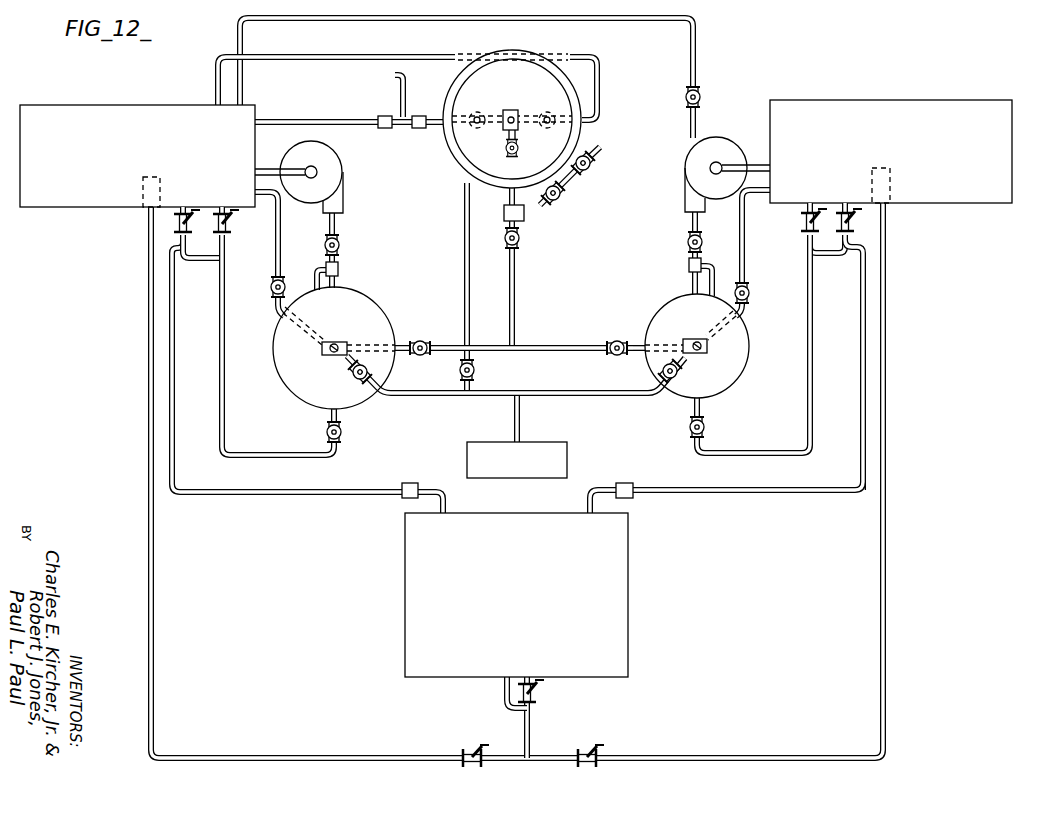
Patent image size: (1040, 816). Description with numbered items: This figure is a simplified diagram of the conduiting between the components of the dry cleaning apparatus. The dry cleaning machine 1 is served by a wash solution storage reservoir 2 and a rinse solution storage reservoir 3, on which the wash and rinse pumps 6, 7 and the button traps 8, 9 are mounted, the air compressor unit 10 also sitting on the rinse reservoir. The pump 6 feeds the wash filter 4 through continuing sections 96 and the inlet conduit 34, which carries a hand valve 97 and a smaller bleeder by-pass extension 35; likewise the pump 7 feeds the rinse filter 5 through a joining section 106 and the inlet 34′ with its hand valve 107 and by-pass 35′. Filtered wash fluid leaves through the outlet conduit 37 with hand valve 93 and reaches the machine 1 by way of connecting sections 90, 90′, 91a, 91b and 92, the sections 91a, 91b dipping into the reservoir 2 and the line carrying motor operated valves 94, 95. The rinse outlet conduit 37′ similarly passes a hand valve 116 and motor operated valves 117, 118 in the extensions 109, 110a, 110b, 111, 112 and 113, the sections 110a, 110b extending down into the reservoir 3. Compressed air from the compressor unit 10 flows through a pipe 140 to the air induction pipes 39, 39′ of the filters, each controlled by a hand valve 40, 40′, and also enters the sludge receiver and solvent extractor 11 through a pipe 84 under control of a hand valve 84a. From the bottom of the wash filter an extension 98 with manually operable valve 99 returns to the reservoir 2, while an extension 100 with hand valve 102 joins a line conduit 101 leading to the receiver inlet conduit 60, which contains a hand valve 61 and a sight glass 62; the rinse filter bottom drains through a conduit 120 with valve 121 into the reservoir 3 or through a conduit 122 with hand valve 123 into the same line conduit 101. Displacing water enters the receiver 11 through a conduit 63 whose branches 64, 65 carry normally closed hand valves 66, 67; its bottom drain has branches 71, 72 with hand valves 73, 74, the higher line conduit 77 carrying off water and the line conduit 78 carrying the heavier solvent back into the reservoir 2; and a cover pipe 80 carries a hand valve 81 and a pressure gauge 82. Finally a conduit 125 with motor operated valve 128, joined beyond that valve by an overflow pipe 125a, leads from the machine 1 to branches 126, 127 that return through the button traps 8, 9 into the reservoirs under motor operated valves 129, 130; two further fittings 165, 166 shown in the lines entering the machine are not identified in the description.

The dry cleaning machine 1 is at (516, 595).
The wash solution storage reservoir 2 is at (133, 104).
The rinse solution storage reservoir 3 is at (880, 99).
The wash fluid filter 4 is at (383, 308).
The rinse fluid filter 5 is at (655, 306).
The wash fluid pump 6 is at (344, 175).
The rinse fluid pump 7 is at (685, 175).
The button trap 8 is at (142, 184).
The button trap 9 is at (891, 178).
The motor-driven air compressor unit 10 is at (568, 457).
The sludge receiver and solvent extractor 11 is at (568, 62).
The inlet conduit 34 is at (340, 270).
The inlet conduit 34′ is at (688, 268).
The bleeder by-pass pipe 35 is at (315, 283).
The bleeder by-pass pipe 35′ is at (712, 263).
The outlet conduit 37 is at (338, 414).
The outlet conduit 37′ is at (700, 405).
The air induction pipe 39 is at (442, 395).
The air induction pipe 39′ is at (622, 395).
The hand valve 40 is at (352, 378).
The hand valve 40′ is at (680, 376).
The inlet conduit 60 is at (509, 200).
The hand valve 61 is at (521, 244).
The sight glass 62 is at (525, 218).
The displacing liquid conduit 63 is at (562, 192).
The branch 64 is at (546, 210).
The branch 65 is at (592, 160).
The hand valve 66 is at (560, 201).
The hand valve 67 is at (572, 175).
The drain branch 71 is at (450, 108).
The drain branch 72 is at (216, 88).
The hand valve 73 is at (478, 110).
The hand valve 74 is at (547, 110).
The line conduit 77 is at (400, 80).
The line conduit 78 is at (315, 120).
The pipe 80 is at (508, 137).
The hand valve 81 is at (520, 146).
The pressure gauge 82 is at (511, 108).
The compressed air pipe 84 is at (464, 250).
The hand valve 84a is at (476, 370).
The connecting section 90 is at (278, 456).
The connecting section 90′ is at (204, 260).
The connecting section 91a is at (223, 208).
The connecting section 91b is at (184, 208).
The connecting section 92 is at (174, 365).
The hand valve 93 is at (344, 434).
The motor operated valve 94 is at (232, 224).
The motor operated valve 95 is at (174, 224).
The continuing sections 96 is at (336, 222).
The hand valve 97 is at (341, 243).
The drain extension 98 is at (276, 253).
The manually-operable valve 99 is at (270, 289).
The drain extension 100 is at (490, 346).
The line conduit 101 is at (515, 298).
The hand valve 102 is at (420, 338).
The joining section 106 is at (690, 222).
The hand valve 107 is at (686, 242).
The conduit section 109 is at (809, 410).
The conduit section 110a is at (808, 205).
The conduit section 110b is at (846, 205).
The conduit section 111 is at (828, 255).
The conduit section 112 is at (862, 345).
The conduit section 113 is at (745, 493).
The hand valve 116 is at (707, 427).
The motor operated valve 117 is at (800, 222).
The motor operated valve 118 is at (854, 222).
The conduit 120 is at (745, 258).
The manually operable valve 121 is at (752, 293).
The conduit 122 is at (637, 353).
The hand valve 123 is at (616, 338).
The conduit 125 is at (529, 748).
The overflow pipe 125a is at (505, 693).
The branch conduit 126 is at (150, 328).
The branch conduit 127 is at (884, 318).
The motor operated valve 128 is at (538, 693).
The motor operated valve 129 is at (474, 748).
The motor operated valve 130 is at (590, 747).
The compressed air pipe 140 is at (528, 412).
The wash supply valve 165 is at (410, 482).
The rinse supply valve 166 is at (624, 482).